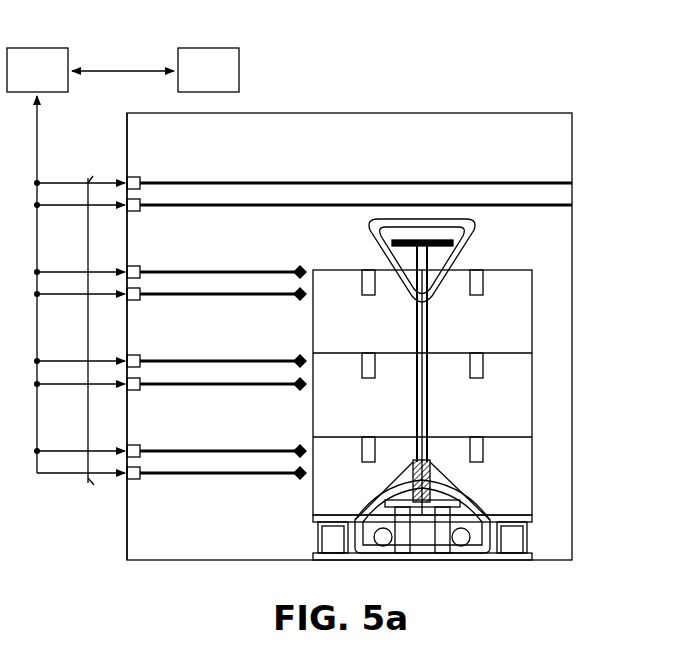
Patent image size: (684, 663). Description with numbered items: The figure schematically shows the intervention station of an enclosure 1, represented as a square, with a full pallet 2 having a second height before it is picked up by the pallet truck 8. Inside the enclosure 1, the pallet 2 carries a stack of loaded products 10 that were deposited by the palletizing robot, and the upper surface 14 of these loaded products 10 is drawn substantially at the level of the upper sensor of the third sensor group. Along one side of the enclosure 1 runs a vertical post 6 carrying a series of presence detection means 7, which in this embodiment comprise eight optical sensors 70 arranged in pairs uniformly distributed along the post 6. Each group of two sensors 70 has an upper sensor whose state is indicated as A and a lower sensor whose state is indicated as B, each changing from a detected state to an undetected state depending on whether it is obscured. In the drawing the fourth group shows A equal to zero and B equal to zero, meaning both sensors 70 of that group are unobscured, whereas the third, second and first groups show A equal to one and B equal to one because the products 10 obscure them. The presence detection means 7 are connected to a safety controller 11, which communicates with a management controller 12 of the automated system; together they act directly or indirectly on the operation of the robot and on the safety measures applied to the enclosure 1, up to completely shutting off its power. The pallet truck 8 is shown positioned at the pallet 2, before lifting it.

The enclosure 1 is at (553, 95).
The pallet 2 is at (528, 558).
The vertical post 6 is at (127, 143).
The presence detection means 7 is at (90, 338).
The pallet truck 8 is at (469, 254).
The products 10 is at (422, 392).
The safety controller 11 is at (37, 260).
The management controller 12 is at (155, 70).
The upper surface 14 is at (348, 268).
The optical sensors 70 is at (140, 186).